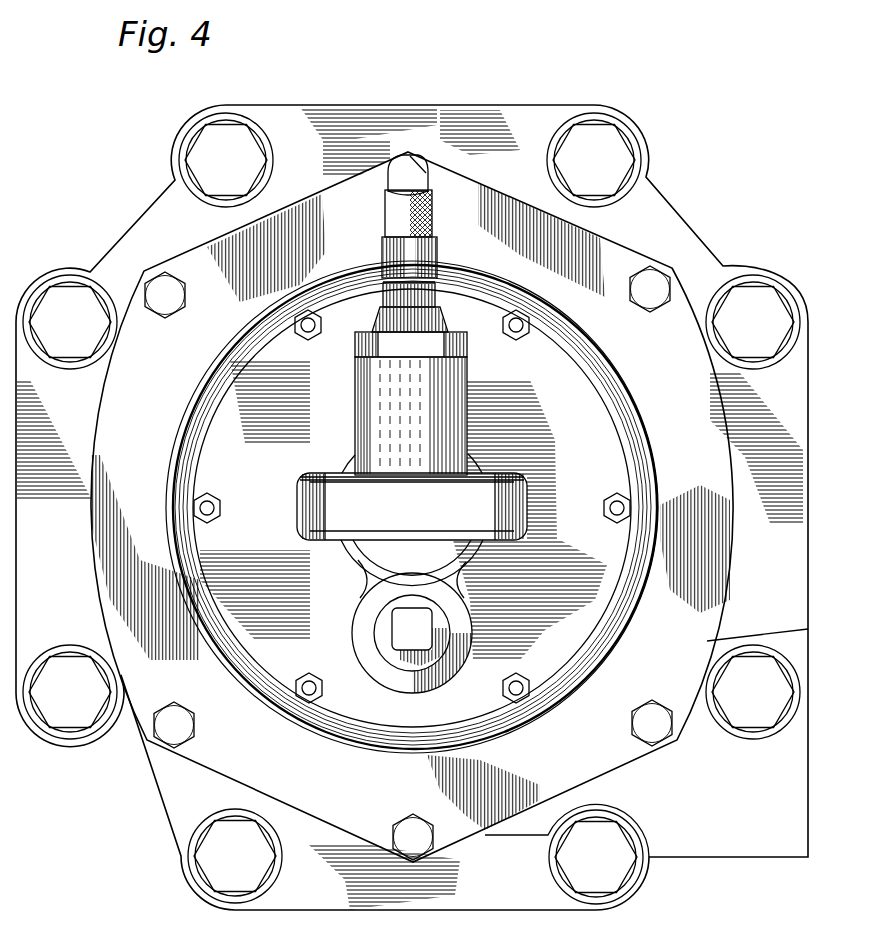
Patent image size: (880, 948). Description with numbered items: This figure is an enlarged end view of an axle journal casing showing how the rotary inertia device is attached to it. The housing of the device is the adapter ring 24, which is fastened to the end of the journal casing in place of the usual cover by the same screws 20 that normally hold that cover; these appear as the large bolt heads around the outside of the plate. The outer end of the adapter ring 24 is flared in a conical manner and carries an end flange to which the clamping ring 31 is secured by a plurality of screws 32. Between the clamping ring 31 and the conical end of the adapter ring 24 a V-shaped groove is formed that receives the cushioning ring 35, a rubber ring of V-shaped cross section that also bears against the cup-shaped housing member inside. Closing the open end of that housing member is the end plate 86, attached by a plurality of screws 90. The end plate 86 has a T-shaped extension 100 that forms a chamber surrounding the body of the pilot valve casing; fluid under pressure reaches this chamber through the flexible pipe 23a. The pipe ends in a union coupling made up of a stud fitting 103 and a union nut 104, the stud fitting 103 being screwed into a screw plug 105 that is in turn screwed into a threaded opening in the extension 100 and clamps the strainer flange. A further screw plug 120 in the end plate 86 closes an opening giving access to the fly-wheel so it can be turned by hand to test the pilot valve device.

The screws 20 is at (200, 162).
The adapter ring 24 is at (418, 110).
The clamping ring 31 is at (609, 249).
The screws 32 is at (410, 170).
The cushioning ring 35 is at (564, 338).
The end plate 86 is at (473, 705).
The screws 90 is at (500, 322).
The T-shaped extension 100 is at (328, 515).
The stud fitting 103 is at (387, 297).
The union nut 104 is at (418, 253).
The screw plug 105 is at (457, 340).
The screw plug 120 is at (383, 615).
The flexible pipe 23a is at (407, 210).